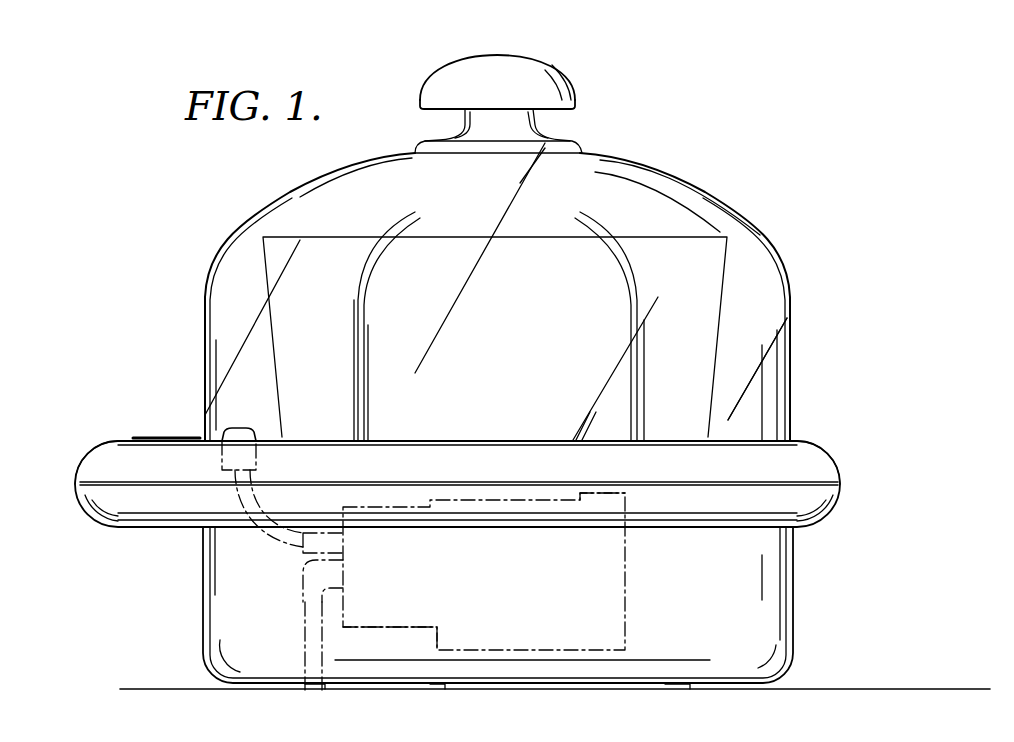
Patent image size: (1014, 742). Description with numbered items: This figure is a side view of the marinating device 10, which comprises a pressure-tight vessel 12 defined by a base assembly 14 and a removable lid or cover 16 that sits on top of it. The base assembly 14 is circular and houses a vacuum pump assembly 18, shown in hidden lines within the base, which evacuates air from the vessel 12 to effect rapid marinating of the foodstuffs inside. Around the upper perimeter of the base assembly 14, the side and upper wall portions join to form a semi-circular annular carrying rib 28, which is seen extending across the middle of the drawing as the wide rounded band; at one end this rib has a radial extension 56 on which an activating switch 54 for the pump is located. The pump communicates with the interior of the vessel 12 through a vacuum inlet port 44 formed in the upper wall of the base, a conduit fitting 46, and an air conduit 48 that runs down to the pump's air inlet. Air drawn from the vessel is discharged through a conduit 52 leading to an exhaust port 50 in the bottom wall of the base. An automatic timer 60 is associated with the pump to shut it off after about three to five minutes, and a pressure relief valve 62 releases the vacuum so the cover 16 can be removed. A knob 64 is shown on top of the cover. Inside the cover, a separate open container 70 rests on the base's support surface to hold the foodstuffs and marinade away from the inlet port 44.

The marinating device 10 is at (864, 198).
The pressure-tight vessel 12 is at (845, 455).
The base assembly 14 is at (795, 578).
The removable lid or cover 16 is at (787, 345).
The vacuum pump assembly 18 is at (627, 583).
The carrying rib 28 is at (812, 436).
The vacuum inlet port 44 is at (238, 430).
The conduit fitting 46 is at (258, 462).
The air conduit 48 is at (275, 556).
The exhaust port 50 is at (303, 692).
The conduit 52 is at (303, 648).
The activating switch 54 is at (150, 436).
The radial extension 56 is at (88, 466).
The automatic timer 60 is at (616, 476).
The pressure relief valve 62 is at (353, 628).
The knob 64 is at (580, 97).
The open container 70 is at (718, 321).